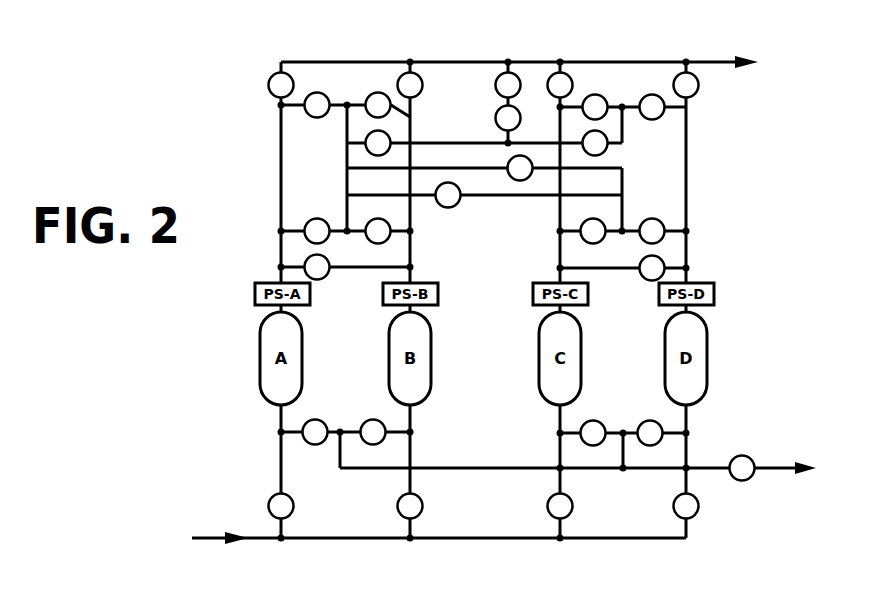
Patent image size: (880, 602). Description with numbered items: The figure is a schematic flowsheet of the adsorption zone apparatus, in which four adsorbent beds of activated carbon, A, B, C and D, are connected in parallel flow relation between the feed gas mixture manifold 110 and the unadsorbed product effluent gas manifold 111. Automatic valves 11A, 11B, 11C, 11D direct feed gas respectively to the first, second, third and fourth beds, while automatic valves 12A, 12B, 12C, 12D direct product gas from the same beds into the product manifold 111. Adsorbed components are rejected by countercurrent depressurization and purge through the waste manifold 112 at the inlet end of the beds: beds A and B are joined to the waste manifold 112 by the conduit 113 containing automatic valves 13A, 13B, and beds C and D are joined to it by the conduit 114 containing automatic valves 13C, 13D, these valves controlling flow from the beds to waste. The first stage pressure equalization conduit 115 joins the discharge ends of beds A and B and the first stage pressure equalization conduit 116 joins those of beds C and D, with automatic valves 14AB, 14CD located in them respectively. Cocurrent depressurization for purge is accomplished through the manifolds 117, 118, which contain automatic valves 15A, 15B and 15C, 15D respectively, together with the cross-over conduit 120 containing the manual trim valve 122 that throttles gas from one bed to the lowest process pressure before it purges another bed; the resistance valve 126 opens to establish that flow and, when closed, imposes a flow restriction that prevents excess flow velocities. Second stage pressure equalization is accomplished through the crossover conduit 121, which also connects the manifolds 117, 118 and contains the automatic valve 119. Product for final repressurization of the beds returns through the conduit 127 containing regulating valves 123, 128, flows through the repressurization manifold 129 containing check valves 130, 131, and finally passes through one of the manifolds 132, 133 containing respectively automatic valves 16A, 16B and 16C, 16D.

The feed gas mixture manifold 110 is at (200, 540).
The unadsorbed product effluent gas manifold 111 is at (720, 62).
The waste manifold 112 is at (468, 466).
The conduit 113 is at (340, 432).
The conduit 114 is at (623, 433).
The first stage pressure equalization conduit 115 is at (340, 271).
The first stage pressure equalization conduit 116 is at (604, 273).
The manifold 117 is at (298, 228).
The manifold 118 is at (670, 227).
The automatic valve 119 is at (508, 165).
The cross-over conduit 120 is at (488, 197).
The crossover conduit 121 is at (468, 170).
The manual trim valve 122 is at (447, 208).
The regulating valve 123 is at (495, 85).
The resistance valve 126 is at (740, 481).
The conduit 127 is at (503, 141).
The regulating valve 128 is at (495, 118).
The repressurization manifold 129 is at (452, 144).
The check valve 130 is at (365, 144).
The check valve 131 is at (608, 146).
The manifold 132 is at (352, 95).
The manifold 133 is at (633, 106).
The automatic valve 12A is at (268, 87).
The automatic valve 12B is at (423, 89).
The automatic valve 12C is at (597, 58).
The automatic valve 12D is at (699, 87).
The automatic valve 16A is at (309, 113).
The automatic valve 16B is at (405, 118).
The automatic valve 16C is at (582, 108).
The automatic valve 16D is at (660, 118).
The automatic valve 15A is at (320, 218).
The automatic valve 15B is at (391, 215).
The automatic valve 15C is at (596, 214).
The automatic valve 15D is at (658, 220).
The automatic valve 14AB is at (334, 256).
The automatic valve 14CD is at (643, 259).
The automatic valve 13A is at (320, 445).
The automatic valve 13B is at (372, 445).
The automatic valve 13C is at (586, 425).
The automatic valve 13D is at (645, 444).
The automatic valve 11A is at (294, 506).
The automatic valve 11B is at (423, 506).
The automatic valve 11C is at (548, 506).
The automatic valve 11D is at (673, 506).